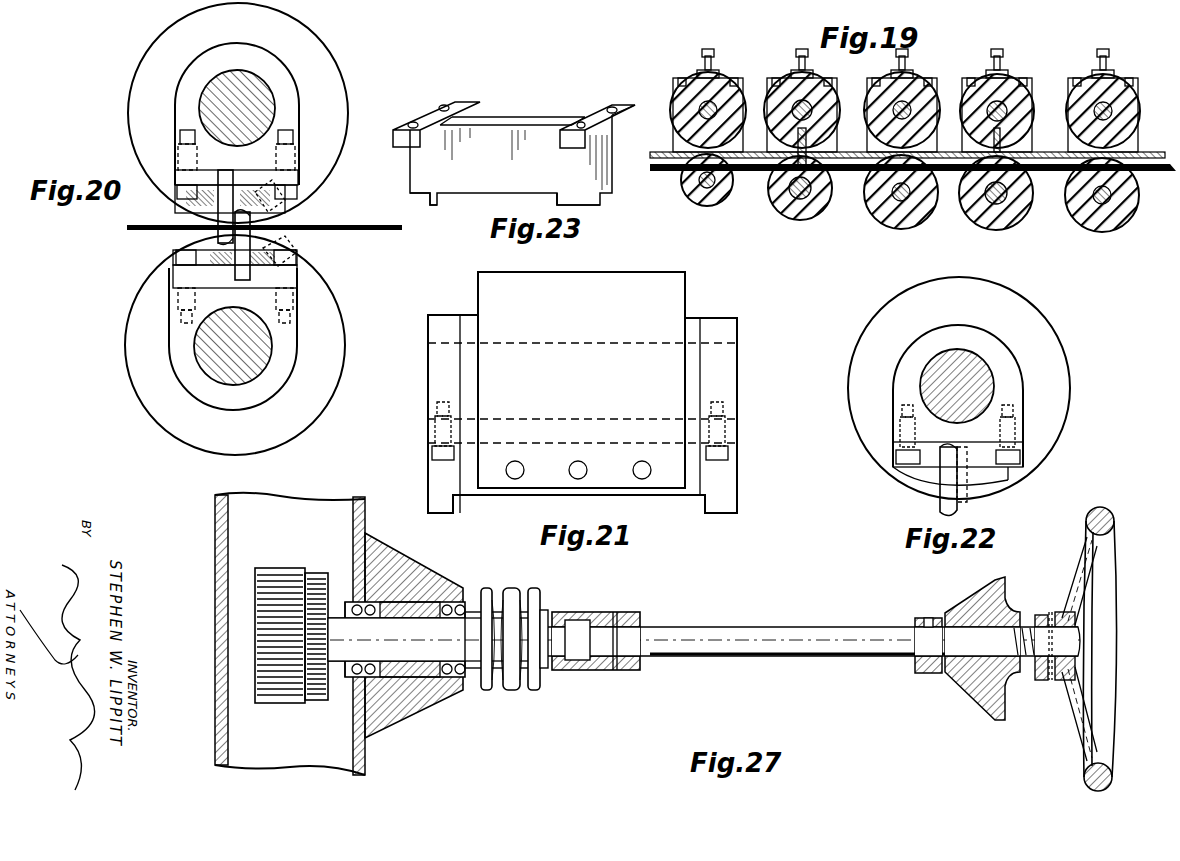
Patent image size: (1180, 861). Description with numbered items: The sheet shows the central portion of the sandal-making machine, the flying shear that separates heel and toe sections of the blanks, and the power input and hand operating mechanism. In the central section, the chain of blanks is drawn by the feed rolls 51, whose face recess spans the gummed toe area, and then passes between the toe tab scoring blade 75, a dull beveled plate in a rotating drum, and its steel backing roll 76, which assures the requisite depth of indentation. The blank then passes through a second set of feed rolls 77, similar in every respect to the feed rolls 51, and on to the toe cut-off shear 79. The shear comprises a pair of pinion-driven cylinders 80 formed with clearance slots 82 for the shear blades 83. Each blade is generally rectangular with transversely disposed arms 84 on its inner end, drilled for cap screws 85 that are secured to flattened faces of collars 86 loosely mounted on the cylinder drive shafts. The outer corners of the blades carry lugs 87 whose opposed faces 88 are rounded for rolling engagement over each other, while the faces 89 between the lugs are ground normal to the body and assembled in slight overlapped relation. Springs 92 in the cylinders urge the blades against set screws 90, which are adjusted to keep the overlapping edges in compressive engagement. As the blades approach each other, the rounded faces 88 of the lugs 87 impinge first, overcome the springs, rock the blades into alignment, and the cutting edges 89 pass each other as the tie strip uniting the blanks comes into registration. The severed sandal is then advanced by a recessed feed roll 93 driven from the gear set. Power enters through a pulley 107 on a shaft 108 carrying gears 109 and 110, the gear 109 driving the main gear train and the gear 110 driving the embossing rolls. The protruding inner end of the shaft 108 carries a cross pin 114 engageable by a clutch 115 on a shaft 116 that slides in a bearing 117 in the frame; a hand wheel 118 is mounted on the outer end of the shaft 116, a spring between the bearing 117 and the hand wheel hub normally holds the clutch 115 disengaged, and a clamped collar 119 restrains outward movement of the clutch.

In FIG. 19, the feed rolls 51 is at (1140, 114).
In FIG. 19, the toe tab scoring blade 75 is at (1012, 137).
In FIG. 19, the backing roll 76 is at (1016, 228).
In FIG. 20, the second set of feed rolls 77 is at (264, 227).
In FIG. 19, the second set of feed rolls 77 is at (880, 129).
In FIG. 19, the toe cut-off shear 79 is at (774, 100).
In FIG. 20, the cylinders 80 is at (346, 100).
In FIG. 21, the cylinders 80 is at (673, 272).
In FIG. 22, the cylinders 80 is at (890, 311).
In FIG. 22, the clearance slots 82 is at (962, 492).
In FIG. 23, the shear blades 83 is at (492, 183).
In FIG. 22, the shear blades 83 is at (940, 506).
In FIG. 23, the arms 84 is at (458, 102).
In FIG. 20, the cap screws 85 is at (235, 226).
In FIG. 21, the cap screws 85 is at (730, 456).
In FIG. 22, the cap screws 85 is at (897, 465).
In FIG. 20, the collars 86 is at (284, 68).
In FIG. 21, the collars 86 is at (730, 400).
In FIG. 22, the collars 86 is at (1012, 355).
In FIG. 23, the lugs 87 is at (418, 197).
In FIG. 20, the opposed faces 88 is at (300, 215).
In FIG. 22, the opposed faces 88 is at (975, 512).
In FIG. 20, the faces 89 is at (300, 205).
In FIG. 23, the faces 89 is at (553, 193).
In FIG. 20, the set screws 90 is at (278, 208).
In FIG. 20, the springs 92 is at (190, 210).
In FIG. 19, the feed roll 93 is at (672, 100).
In FIG. 27, the pulley 107 is at (524, 690).
In FIG. 27, the shaft 108 is at (418, 645).
In FIG. 27, the gear 109 is at (319, 702).
In FIG. 27, the gear 110 is at (271, 705).
In FIG. 27, the cross pin 114 is at (547, 612).
In FIG. 27, the clutch 115 is at (592, 671).
In FIG. 27, the shaft 116 is at (686, 657).
In FIG. 27, the bearing 117 is at (972, 670).
In FIG. 27, the hand wheel 118 is at (1115, 780).
In FIG. 27, the collar 119 is at (917, 675).